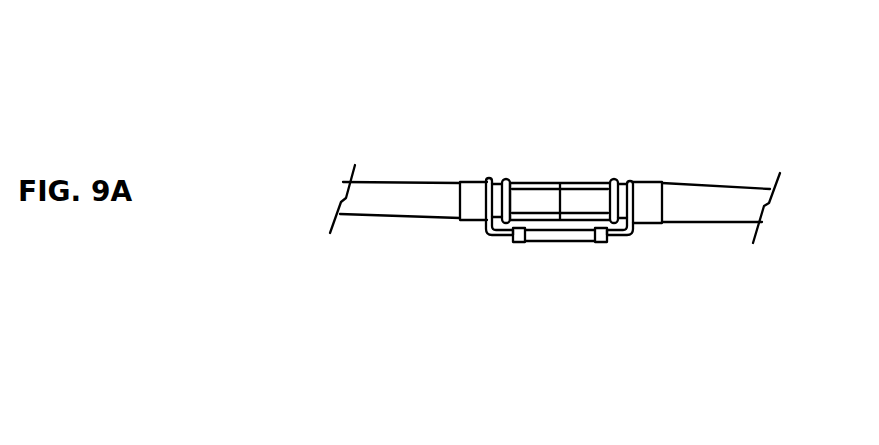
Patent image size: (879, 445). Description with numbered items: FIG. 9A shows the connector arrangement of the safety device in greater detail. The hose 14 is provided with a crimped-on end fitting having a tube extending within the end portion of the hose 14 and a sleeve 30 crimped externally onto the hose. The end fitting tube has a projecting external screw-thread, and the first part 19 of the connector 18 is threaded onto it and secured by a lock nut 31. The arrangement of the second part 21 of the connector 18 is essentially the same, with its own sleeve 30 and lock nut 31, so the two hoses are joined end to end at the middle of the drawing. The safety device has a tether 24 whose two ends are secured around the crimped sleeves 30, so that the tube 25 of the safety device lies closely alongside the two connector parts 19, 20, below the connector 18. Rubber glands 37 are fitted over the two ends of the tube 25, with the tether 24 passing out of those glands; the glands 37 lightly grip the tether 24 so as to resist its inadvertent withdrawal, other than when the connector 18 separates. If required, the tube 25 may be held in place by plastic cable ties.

The hose 14 is at (345, 278).
The second part of connector 21 is at (722, 305).
The sleeve 30 is at (465, 181).
The lock nut 31 is at (503, 179).
The connector 18 is at (587, 53).
The first part of connector 19 is at (535, 183).
The connector part 20 is at (587, 183).
The tether 24 is at (492, 238).
The tube 25 is at (563, 245).
The rubber glands 37 is at (518, 242).